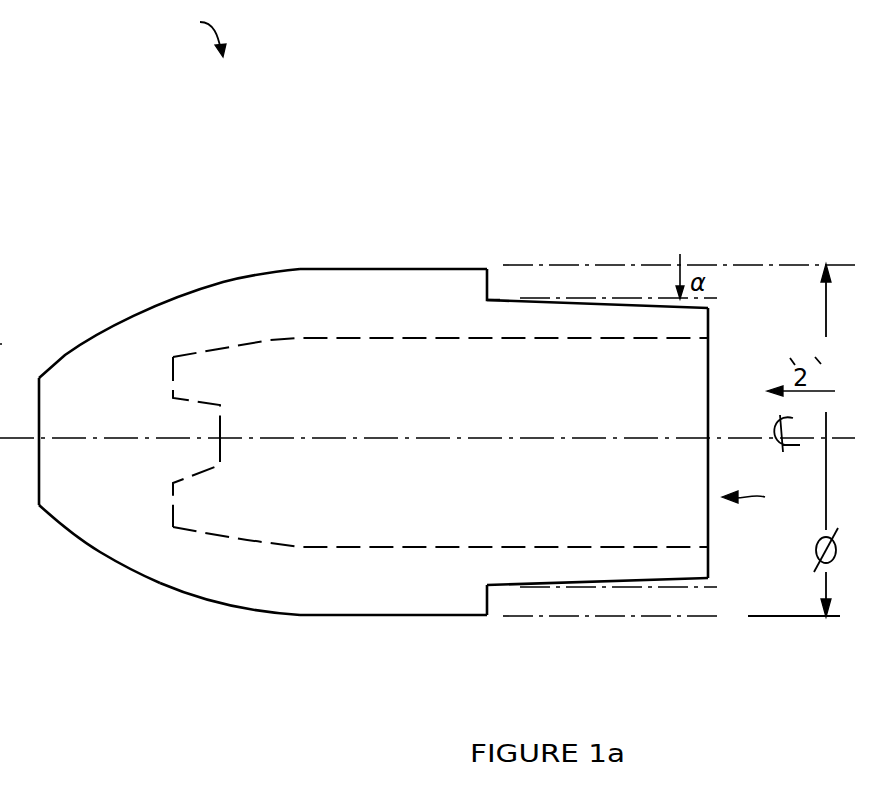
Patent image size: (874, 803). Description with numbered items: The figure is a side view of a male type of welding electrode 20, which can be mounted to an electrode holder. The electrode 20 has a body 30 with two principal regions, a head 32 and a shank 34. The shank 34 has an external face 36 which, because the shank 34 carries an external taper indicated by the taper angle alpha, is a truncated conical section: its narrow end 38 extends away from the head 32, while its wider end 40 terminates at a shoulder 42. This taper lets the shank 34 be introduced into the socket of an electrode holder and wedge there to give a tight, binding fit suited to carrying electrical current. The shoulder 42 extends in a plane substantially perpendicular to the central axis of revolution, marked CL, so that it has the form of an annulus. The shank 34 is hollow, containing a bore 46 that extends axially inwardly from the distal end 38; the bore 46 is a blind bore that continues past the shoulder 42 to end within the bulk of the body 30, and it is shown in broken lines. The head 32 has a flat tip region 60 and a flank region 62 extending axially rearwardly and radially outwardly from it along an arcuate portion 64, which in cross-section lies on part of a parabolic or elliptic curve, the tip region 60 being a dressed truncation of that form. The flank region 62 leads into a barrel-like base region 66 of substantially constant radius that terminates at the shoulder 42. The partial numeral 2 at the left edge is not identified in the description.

The welding electrode 20 is at (187, 35).
The projectile body (partial numeral) 2 is at (6, 345).
The body 30 is at (363, 283).
The head 32 is at (131, 337).
The shank 34 is at (527, 315).
The external face 36 is at (556, 318).
The narrow end 38 is at (700, 563).
The wider end 40 is at (505, 586).
The shoulder 42 is at (488, 600).
The bore 46 is at (764, 502).
The tip region 60 is at (38, 490).
The flank region 62 is at (160, 583).
The arcuate portion 64 is at (100, 553).
The barrel-like base region 66 is at (392, 612).